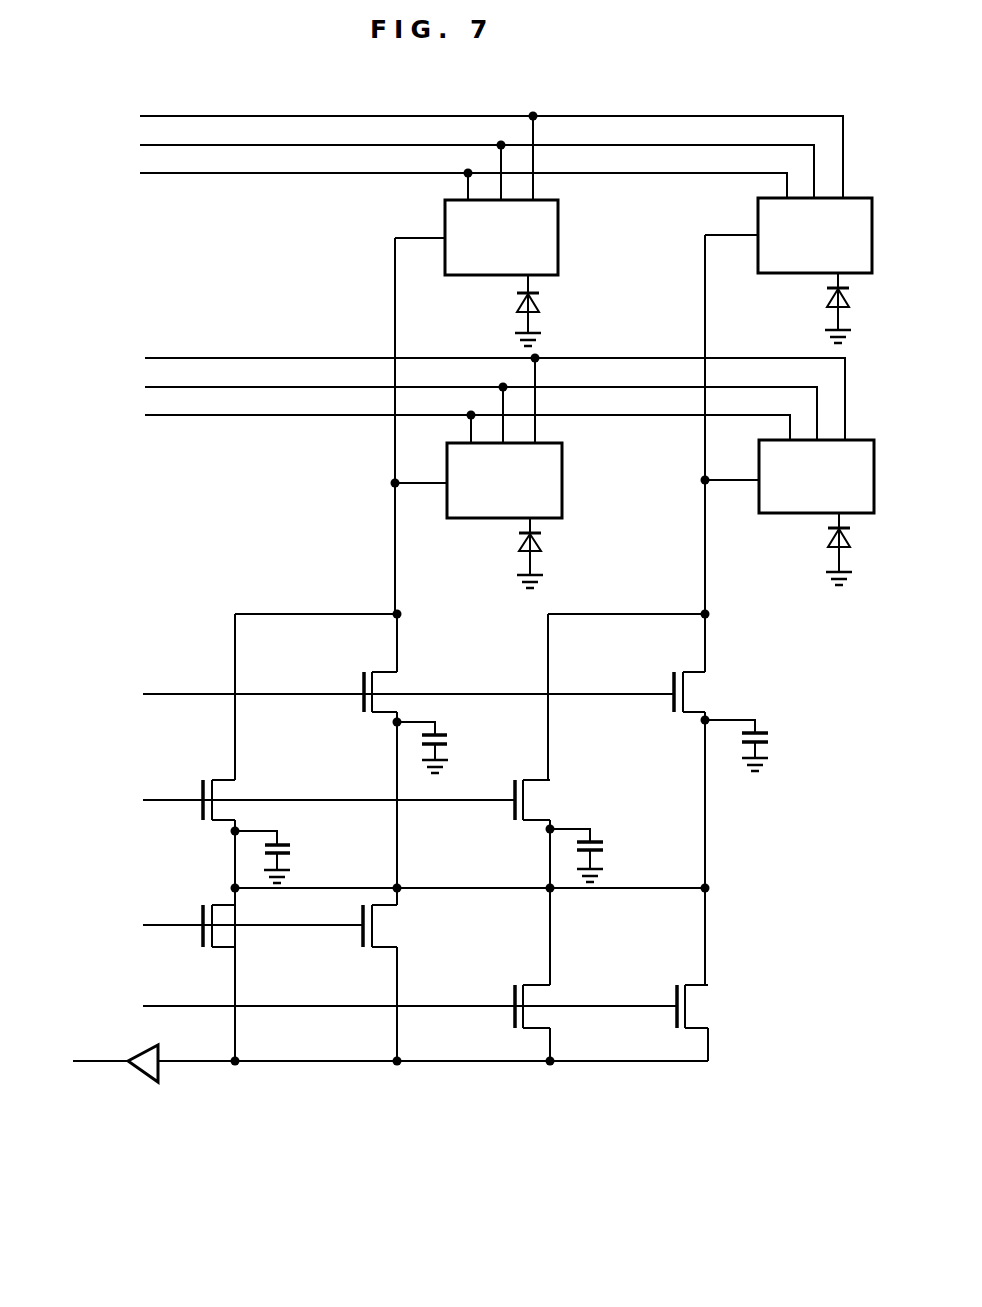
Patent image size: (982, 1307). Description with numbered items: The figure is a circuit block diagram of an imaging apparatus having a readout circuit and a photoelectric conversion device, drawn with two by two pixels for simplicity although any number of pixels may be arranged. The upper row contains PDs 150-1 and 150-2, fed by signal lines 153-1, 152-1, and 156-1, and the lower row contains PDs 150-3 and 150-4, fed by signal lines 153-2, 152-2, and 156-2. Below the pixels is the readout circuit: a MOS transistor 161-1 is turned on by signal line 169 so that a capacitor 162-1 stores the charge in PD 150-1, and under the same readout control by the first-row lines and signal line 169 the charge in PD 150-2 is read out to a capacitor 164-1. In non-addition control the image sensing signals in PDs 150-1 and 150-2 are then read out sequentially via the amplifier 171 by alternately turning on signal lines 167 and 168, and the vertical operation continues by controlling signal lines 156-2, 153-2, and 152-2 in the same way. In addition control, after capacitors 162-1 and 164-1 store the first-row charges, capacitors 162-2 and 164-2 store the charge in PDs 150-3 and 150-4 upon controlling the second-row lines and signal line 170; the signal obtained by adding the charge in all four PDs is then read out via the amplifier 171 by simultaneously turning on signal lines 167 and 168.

The signal line 153-1 is at (140, 117).
The signal line 152-1 is at (140, 146).
The signal line 156-1 is at (140, 174).
The signal line 153-2 is at (145, 359).
The signal line 152-2 is at (145, 388).
The signal line 156-2 is at (145, 416).
The PD 150-1 is at (515, 321).
The PD 150-2 is at (823, 321).
The PD 150-3 is at (517, 563).
The PD 150-4 is at (825, 560).
The MOS transistor 161-1 is at (390, 683).
The capacitor 162-1 is at (450, 740).
The capacitor 164-1 is at (770, 738).
The capacitor 162-2 is at (292, 849).
The capacitor 164-2 is at (605, 847).
The signal line 169 is at (150, 697).
The signal line 170 is at (150, 803).
The signal line 167 is at (150, 926).
The signal line 168 is at (148, 1006).
The amplifier 171 is at (146, 1073).